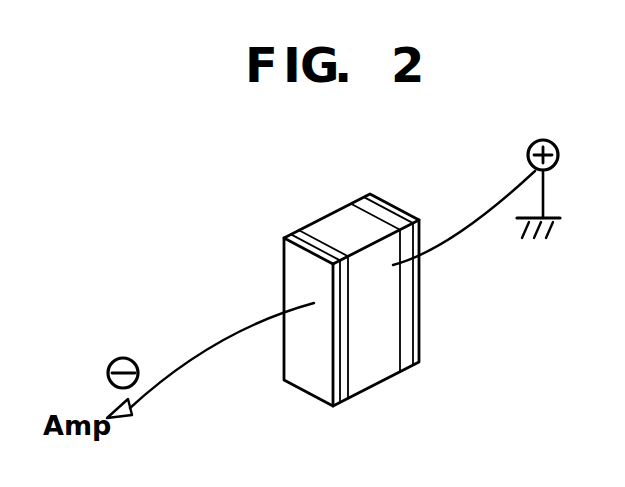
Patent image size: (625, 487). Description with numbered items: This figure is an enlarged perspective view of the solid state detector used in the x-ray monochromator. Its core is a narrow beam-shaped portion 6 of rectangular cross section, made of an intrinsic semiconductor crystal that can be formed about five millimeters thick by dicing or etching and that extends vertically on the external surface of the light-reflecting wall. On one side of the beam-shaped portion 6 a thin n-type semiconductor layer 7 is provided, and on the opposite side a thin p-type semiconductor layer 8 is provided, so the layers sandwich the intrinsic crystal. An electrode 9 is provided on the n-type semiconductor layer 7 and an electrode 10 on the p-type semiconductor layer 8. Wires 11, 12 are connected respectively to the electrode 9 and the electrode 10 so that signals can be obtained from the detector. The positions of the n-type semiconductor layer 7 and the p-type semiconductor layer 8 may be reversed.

The narrow beam-shaped portion 6 is at (384, 346).
The n-type semiconductor layer 7 is at (404, 271).
The p-type semiconductor layer 8 is at (347, 348).
The electrode 9 is at (418, 309).
The electrode 10 is at (332, 372).
The wire 11 is at (470, 221).
The wire 12 is at (208, 350).